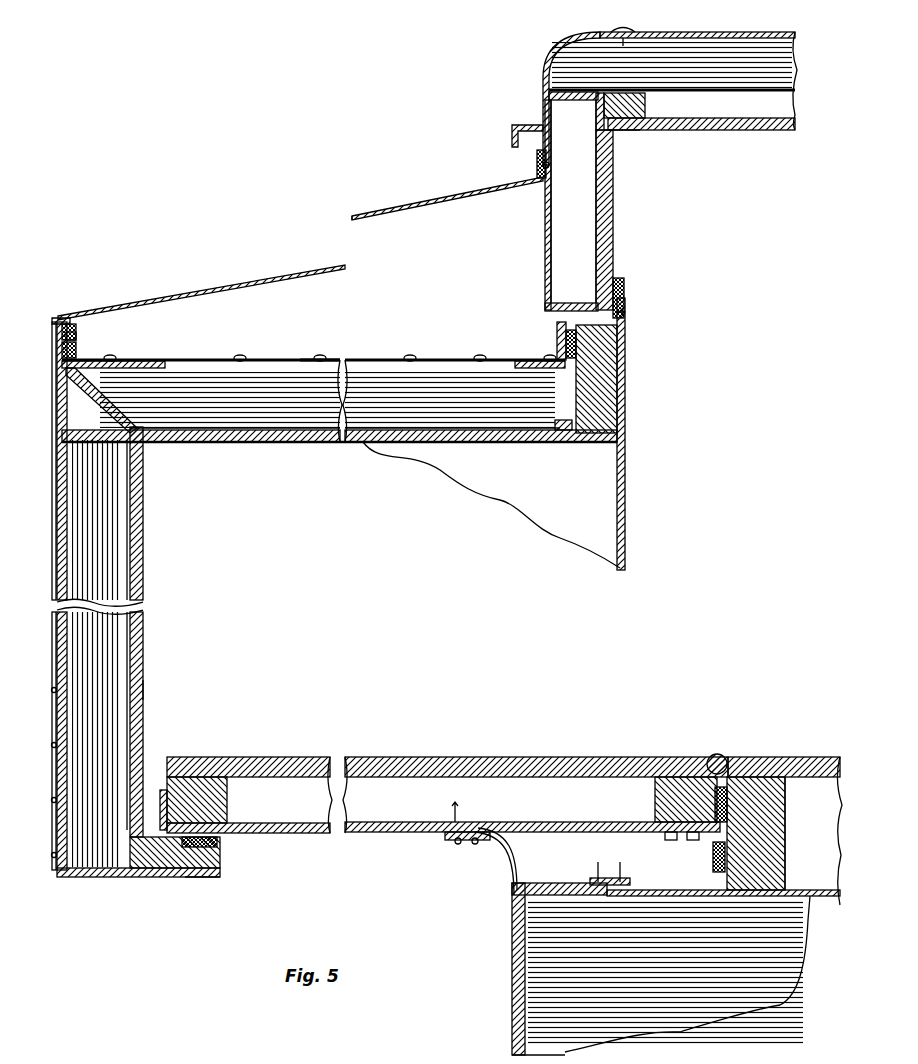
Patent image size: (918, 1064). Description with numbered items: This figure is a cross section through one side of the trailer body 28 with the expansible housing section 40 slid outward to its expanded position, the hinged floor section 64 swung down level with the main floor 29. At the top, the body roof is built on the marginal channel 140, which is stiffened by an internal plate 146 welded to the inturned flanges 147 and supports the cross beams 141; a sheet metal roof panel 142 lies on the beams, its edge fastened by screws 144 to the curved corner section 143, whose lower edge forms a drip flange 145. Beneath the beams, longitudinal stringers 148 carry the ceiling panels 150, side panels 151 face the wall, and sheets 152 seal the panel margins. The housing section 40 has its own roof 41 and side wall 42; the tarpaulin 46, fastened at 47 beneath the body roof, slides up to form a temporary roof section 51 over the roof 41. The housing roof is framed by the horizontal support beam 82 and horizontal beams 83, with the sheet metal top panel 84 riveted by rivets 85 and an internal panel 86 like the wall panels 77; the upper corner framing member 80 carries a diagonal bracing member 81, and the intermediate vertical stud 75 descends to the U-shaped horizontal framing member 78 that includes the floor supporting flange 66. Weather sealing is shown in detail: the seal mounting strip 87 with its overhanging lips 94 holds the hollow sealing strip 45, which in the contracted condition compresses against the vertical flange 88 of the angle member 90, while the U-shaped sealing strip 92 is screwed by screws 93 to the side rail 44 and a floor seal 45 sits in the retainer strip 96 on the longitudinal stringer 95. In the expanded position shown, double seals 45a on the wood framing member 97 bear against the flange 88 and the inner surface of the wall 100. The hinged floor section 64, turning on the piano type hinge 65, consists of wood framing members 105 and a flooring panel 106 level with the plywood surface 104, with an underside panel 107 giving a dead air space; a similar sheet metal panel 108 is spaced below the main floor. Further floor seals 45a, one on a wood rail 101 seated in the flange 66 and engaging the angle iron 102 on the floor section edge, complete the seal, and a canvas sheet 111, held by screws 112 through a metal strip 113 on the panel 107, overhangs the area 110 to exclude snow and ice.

The trailer body 28 is at (770, 31).
The main floor 29 is at (806, 750).
The expansible housing section 40 is at (378, 356).
The roof 41 is at (460, 358).
The side wall 42 is at (56, 665).
The side rail 44 is at (516, 1000).
The sealing strip 45 is at (76, 336).
The second sealing strip 45a is at (626, 295).
The tarpaulin 46 is at (423, 200).
The tarpaulin fastening 47 is at (536, 164).
The temporary roof section 51 is at (372, 212).
The hinged floor section 64 is at (518, 750).
The piano type hinge 65 is at (730, 757).
The flange 66 is at (232, 862).
The intermediate vertical stud 75 is at (105, 641).
The wall panel 77 is at (522, 518).
The horizontal framing member 78 is at (117, 877).
The framing member 80 is at (110, 360).
The diagonal bracing member 81 is at (103, 398).
The horizontal support beam 82 is at (560, 430).
The horizontal beam 83 is at (440, 390).
The top panel 84 is at (315, 358).
The rivet 85 is at (235, 358).
The internal panel 86 is at (330, 442).
The seal mounting strip 87 is at (52, 330).
The vertical flange 88 is at (562, 340).
The angle member 90 is at (583, 304).
The U-shaped sealing strip 92 is at (603, 878).
The screw 93 is at (618, 890).
The overhanging lip 94 is at (75, 322).
The longitudinal stringer 95 is at (770, 810).
The retainer strip 96 is at (193, 877).
The horizontal framing member 97 is at (617, 405).
The wall 100 is at (625, 345).
The wood rail 101 is at (152, 877).
The angle iron 102 is at (163, 780).
The supporting surface 104 is at (795, 757).
The framing member 105 is at (227, 800).
The flooring panel 106 is at (396, 757).
The panel 107 is at (377, 832).
The sheet metal panel 108 is at (811, 930).
The area 110 is at (520, 875).
The canvas sheet 111 is at (516, 890).
The screw 112 is at (456, 812).
The metal strip 113 is at (452, 842).
The marginal channel 140 is at (545, 222).
The cross beam 141 is at (738, 74).
The roof panel 142 is at (700, 32).
The curved corner section 143 is at (548, 60).
The screw 144 is at (620, 28).
The drip flange 145 is at (515, 125).
The internal plate 146 is at (596, 222).
The inturned flange 147 is at (596, 105).
The longitudinal stringer 148 is at (648, 104).
The ceiling panel 150 is at (740, 130).
The side panel 151 is at (613, 190).
The sheet 152 is at (633, 130).